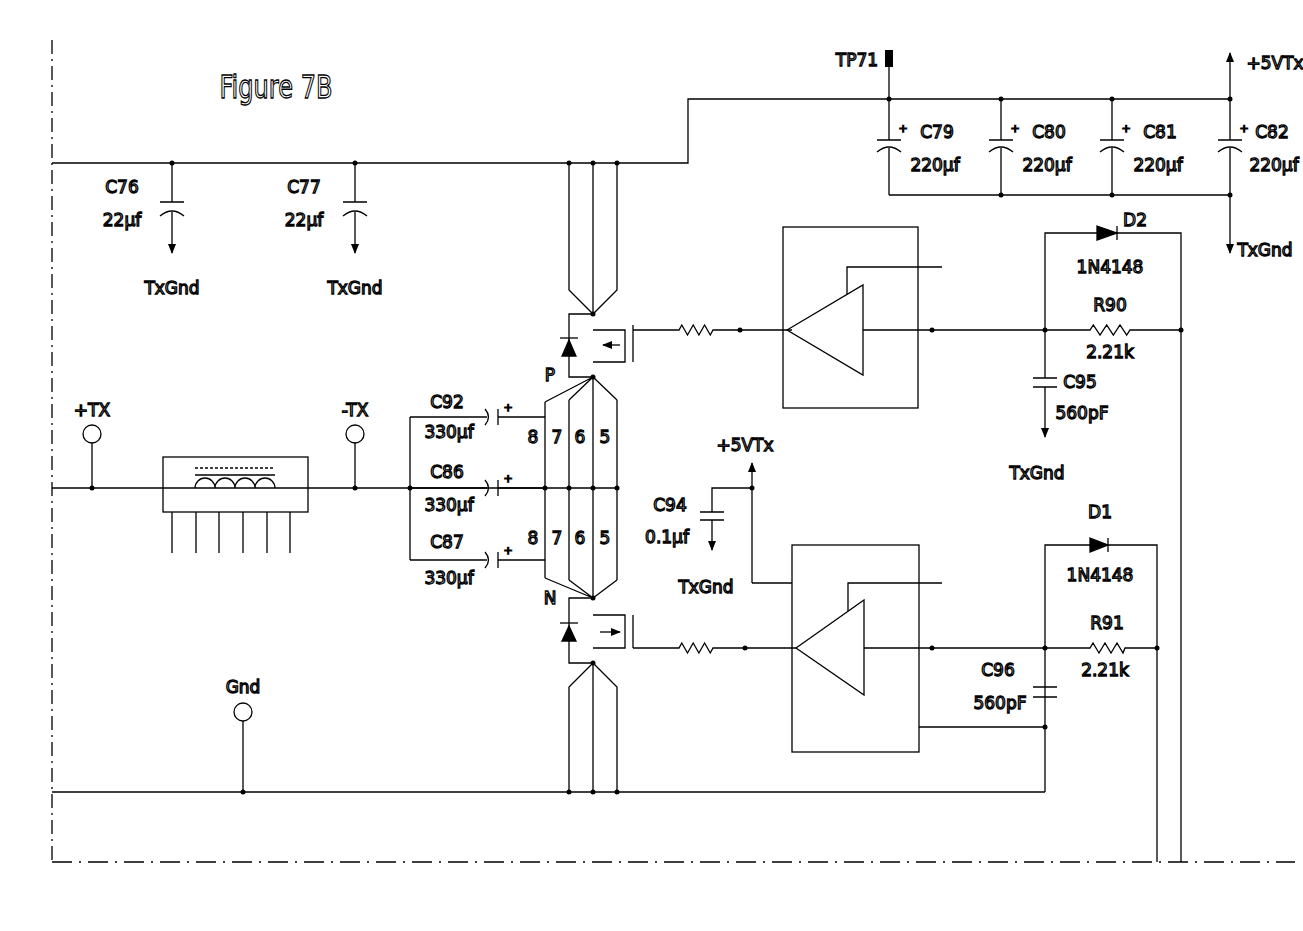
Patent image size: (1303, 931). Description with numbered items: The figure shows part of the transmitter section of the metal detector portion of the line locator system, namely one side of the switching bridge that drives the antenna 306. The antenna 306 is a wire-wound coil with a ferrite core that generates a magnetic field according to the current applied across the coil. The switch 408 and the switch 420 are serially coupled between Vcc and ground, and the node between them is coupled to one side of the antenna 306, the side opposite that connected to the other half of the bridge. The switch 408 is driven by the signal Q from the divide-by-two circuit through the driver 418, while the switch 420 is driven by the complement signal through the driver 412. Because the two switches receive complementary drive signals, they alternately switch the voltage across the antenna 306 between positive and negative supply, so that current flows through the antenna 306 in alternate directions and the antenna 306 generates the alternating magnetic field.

The antenna 306 is at (133, 542).
The switch 408 is at (523, 293).
The driver 412 is at (987, 557).
The driver 418 is at (935, 382).
The switch 420 is at (532, 675).